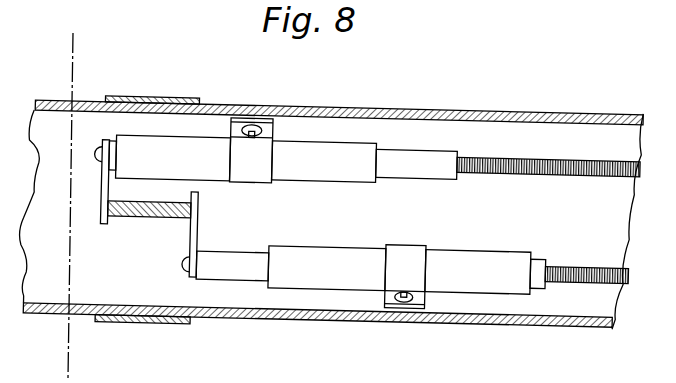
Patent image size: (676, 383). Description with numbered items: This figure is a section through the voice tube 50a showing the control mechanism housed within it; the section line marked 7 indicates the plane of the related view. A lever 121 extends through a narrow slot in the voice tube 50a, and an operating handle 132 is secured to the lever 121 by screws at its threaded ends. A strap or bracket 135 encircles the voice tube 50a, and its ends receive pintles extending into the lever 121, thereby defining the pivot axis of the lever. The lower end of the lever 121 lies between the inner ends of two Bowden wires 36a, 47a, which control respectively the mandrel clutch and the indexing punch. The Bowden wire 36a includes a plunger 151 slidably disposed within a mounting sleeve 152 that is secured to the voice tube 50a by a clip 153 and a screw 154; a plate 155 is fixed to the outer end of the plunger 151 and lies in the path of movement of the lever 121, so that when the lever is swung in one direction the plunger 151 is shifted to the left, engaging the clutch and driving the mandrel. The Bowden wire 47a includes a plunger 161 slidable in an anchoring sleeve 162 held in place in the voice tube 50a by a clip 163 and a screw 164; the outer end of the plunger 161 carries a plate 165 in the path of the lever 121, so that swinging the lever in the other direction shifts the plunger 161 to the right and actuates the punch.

The section line 7- 7 is at (96, 53).
The voice tube 50a is at (419, 101).
The strap or bracket 135 is at (158, 96).
The operating handle 132 is at (298, 382).
The plate 155 is at (101, 203).
The mounting sleeve 152 is at (214, 150).
The screw 154 is at (260, 150).
The clip 153 is at (275, 140).
The plunger 151 is at (443, 162).
The Bowden wire 36a is at (546, 150).
The plate 165 is at (230, 230).
The lever 121 is at (134, 226).
The anchoring sleeve 162 is at (470, 265).
The clip 163 is at (408, 262).
The screw 164 is at (407, 301).
The plunger 161 is at (537, 268).
The Bowden wire 47a is at (570, 290).